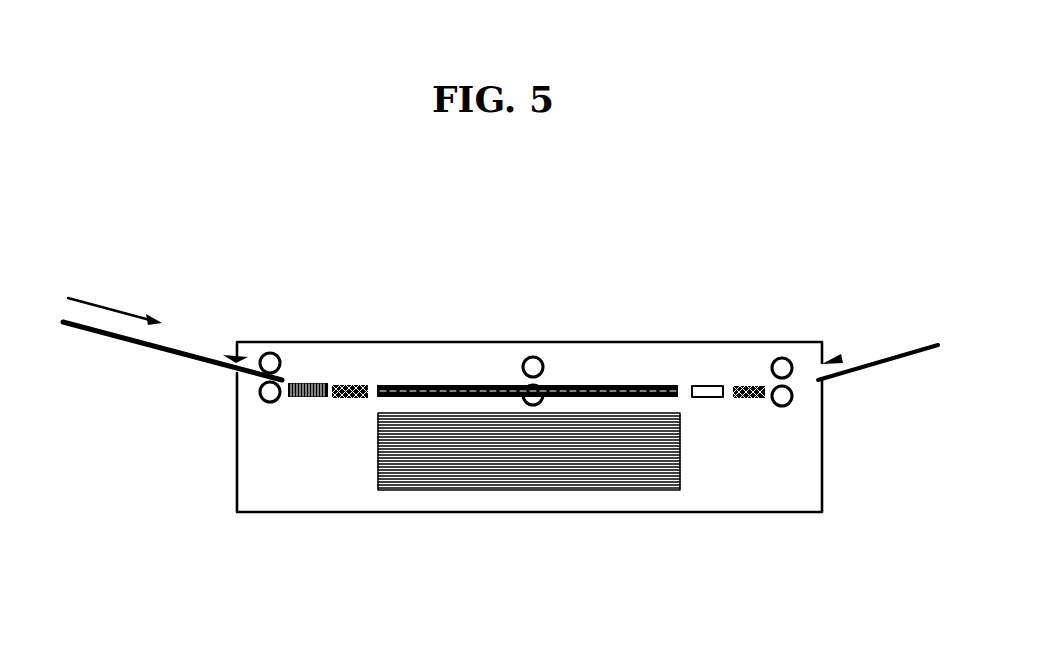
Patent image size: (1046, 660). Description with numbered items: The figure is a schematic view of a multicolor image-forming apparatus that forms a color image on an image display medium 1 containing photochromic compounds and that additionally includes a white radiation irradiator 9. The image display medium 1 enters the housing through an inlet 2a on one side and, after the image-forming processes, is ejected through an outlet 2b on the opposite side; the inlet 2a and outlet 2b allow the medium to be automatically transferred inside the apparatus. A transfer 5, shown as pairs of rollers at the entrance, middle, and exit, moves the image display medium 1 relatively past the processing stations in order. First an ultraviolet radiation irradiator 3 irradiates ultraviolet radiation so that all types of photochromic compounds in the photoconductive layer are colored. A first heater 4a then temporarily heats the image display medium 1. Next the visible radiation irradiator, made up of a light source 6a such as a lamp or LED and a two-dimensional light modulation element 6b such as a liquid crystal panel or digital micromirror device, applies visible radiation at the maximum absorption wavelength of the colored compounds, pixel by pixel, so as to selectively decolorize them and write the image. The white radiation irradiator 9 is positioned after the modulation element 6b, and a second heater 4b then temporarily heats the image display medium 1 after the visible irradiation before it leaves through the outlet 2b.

The image display medium 1 is at (173, 357).
The inlet 2a is at (230, 354).
The outlet 2b is at (838, 356).
The ultraviolet radiation irradiator 3 is at (320, 382).
The first heater 4a is at (357, 382).
The second heater 4b is at (750, 385).
The transfer 5 is at (772, 367).
The light source 6a is at (378, 458).
The two-dimensional light modulation element 6b is at (602, 384).
The white radiation irradiator 9 is at (710, 384).